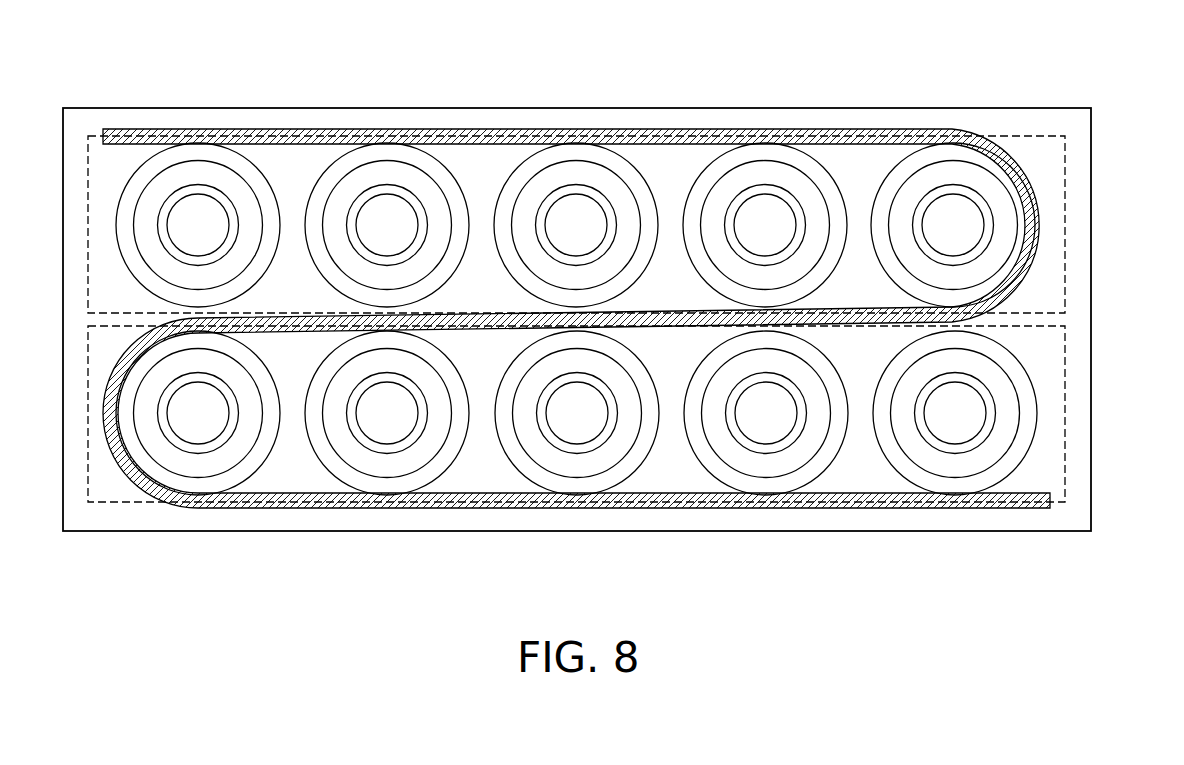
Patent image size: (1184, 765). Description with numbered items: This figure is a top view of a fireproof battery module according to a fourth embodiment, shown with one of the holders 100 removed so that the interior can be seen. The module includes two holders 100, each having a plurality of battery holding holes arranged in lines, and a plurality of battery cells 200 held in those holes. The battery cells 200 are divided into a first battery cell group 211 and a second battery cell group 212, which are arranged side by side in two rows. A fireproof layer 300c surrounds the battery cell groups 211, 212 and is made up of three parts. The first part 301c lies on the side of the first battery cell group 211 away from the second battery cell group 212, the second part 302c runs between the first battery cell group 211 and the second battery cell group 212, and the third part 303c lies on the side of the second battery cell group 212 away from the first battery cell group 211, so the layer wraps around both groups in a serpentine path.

The holder 100 is at (1075, 128).
The battery cell 200 is at (198, 225).
The first battery cell group 211 is at (1065, 220).
The second battery cell group 212 is at (1065, 428).
The fireproof layer 300c is at (641, 320).
The first part 301c is at (830, 131).
The second part 302c is at (885, 310).
The third part 303c is at (828, 504).